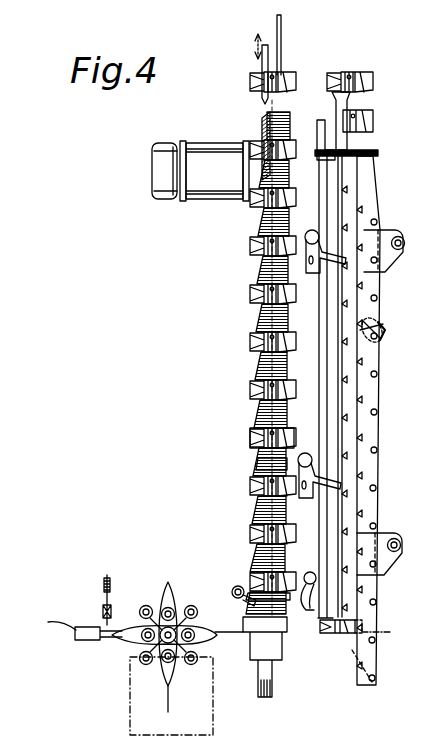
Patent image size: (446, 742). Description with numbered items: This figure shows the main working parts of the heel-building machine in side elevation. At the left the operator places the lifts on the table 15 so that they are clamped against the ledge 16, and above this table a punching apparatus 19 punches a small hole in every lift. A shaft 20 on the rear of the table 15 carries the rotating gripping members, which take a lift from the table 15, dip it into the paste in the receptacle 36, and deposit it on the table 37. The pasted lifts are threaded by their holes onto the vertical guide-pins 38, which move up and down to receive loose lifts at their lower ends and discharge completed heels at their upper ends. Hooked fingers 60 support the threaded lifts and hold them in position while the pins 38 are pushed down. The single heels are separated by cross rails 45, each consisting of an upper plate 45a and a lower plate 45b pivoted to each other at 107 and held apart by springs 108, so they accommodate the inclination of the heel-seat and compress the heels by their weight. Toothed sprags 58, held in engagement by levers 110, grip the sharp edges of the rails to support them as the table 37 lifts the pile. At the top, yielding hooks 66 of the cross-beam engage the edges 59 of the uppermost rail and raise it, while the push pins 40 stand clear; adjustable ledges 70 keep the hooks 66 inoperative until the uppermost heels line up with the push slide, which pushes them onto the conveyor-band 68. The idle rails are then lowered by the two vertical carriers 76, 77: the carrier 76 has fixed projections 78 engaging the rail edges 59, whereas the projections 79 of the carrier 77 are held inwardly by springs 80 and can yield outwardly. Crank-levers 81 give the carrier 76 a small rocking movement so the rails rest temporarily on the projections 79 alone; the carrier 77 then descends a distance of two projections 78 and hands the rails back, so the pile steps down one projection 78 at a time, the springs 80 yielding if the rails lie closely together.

The push pins 40 is at (282, 33).
The yielding hooks 66 is at (262, 61).
The cross rails 45 is at (255, 85).
The adjustable ledges 70 is at (262, 134).
The edges of the rail 59 is at (256, 257).
The conveyor-band 68 is at (223, 199).
The pivot 107 is at (262, 376).
The upper plate 45a is at (254, 432).
The lower plate 45b is at (252, 441).
The vertical guide-pins 38 is at (255, 464).
The springs 108 is at (250, 488).
The carrier 76 is at (319, 369).
The fixed projections 78 is at (340, 392).
The carrier 77 is at (380, 212).
The projections 79 is at (380, 320).
The springs 80 is at (386, 333).
The crank-levers 81 is at (312, 276).
The hooked fingers 60 is at (306, 592).
The toothed sprags 58 is at (262, 586).
The levers 110 is at (233, 598).
The table 37 is at (285, 642).
The receptacle 36 is at (213, 704).
The shaft 20 is at (178, 616).
The punching apparatus 19 is at (104, 601).
The table 15 is at (52, 619).
The ledge 16 is at (84, 640).